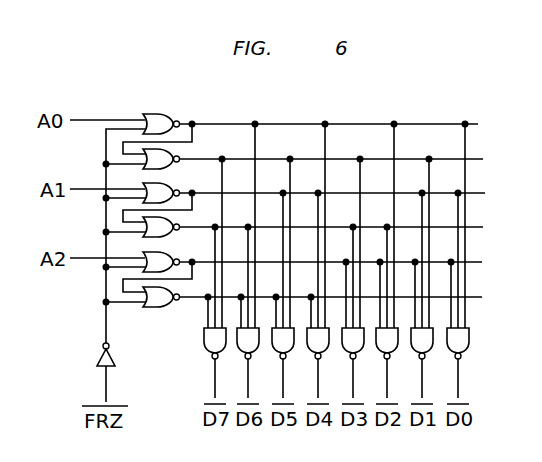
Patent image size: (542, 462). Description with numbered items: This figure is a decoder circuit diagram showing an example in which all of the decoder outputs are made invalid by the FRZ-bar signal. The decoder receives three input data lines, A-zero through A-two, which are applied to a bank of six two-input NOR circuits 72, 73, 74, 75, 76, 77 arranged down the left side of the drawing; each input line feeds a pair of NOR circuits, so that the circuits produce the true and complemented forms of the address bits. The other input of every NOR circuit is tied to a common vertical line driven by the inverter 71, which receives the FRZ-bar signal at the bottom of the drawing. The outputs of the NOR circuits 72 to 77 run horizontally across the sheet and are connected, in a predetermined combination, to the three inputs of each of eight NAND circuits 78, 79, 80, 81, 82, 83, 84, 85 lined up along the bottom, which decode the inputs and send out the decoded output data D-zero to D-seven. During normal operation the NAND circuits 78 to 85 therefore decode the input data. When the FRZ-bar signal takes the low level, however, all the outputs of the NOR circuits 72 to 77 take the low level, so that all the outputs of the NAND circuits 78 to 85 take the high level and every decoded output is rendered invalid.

The inverter 71 is at (95, 352).
The 2-input NOR circuit 72 is at (157, 115).
The 2-input NOR circuit 73 is at (169, 167).
The 2-input NOR circuit 74 is at (143, 203).
The 2-input NOR circuit 75 is at (168, 235).
The 2-input NOR circuit 76 is at (143, 271).
The 2-input NOR circuit 77 is at (155, 308).
The NAND circuit 78 is at (204, 342).
The NAND circuit 79 is at (240, 351).
The NAND circuit 80 is at (275, 351).
The NAND circuit 81 is at (310, 351).
The NAND circuit 82 is at (345, 351).
The NAND circuit 83 is at (379, 351).
The NAND circuit 84 is at (414, 351).
The NAND circuit 85 is at (450, 351).